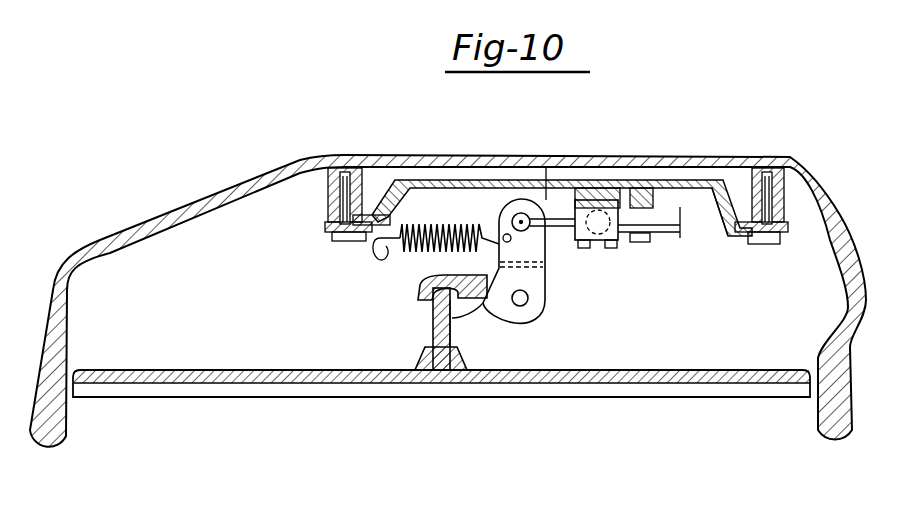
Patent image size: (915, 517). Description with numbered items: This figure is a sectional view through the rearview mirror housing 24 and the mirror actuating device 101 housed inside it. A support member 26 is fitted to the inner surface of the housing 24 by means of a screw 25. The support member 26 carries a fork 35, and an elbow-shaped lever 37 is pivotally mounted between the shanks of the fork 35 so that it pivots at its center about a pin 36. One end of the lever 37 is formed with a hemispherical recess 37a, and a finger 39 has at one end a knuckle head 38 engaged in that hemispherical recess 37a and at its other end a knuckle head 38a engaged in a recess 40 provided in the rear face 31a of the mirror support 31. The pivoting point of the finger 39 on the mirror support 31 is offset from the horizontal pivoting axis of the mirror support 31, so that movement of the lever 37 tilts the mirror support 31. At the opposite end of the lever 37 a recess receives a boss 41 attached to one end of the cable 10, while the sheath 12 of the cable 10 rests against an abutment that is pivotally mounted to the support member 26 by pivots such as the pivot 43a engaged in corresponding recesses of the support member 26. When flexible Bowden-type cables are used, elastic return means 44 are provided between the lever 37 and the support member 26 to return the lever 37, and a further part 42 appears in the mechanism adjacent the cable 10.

The mirror actuating device 101 is at (470, 278).
The rearview mirror housing 24 is at (737, 158).
The screw 25 is at (345, 203).
The support member 26 is at (666, 183).
The mirror support 31 is at (441, 378).
The rear face 31a is at (673, 370).
The fork 35 is at (492, 203).
The pin 36 is at (527, 308).
The elbow-shaped lever 37 is at (529, 300).
The hemispherical recess 37a is at (447, 301).
The knuckle head 38 is at (419, 291).
The knuckle head 38a is at (453, 362).
The finger 39 is at (431, 322).
The recess 40 is at (415, 360).
The boss 41 is at (535, 167).
The actuator block 42 is at (608, 241).
The pivot 43a is at (607, 187).
The elastic return means 44 is at (429, 232).
The cable 10 is at (558, 230).
The sheath 12 is at (668, 221).